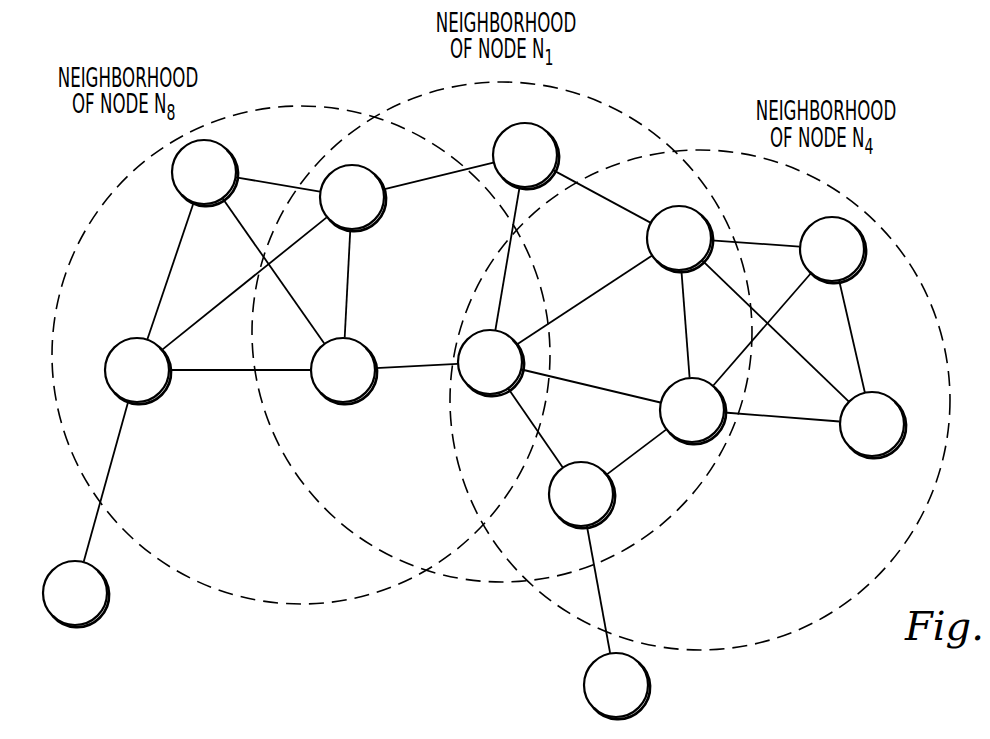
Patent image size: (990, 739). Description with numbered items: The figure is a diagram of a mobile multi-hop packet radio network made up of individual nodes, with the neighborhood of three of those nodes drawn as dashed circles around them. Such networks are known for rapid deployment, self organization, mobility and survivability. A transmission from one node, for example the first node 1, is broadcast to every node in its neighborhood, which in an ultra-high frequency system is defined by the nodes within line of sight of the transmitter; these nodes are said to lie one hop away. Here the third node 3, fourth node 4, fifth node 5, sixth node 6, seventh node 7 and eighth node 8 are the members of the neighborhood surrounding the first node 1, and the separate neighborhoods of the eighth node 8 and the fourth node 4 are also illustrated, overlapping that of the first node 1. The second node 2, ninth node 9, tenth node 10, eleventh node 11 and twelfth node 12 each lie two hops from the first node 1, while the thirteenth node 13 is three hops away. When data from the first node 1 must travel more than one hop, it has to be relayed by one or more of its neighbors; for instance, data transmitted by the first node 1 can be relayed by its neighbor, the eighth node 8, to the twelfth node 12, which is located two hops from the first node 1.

The node N1 1 is at (491, 363).
The node N2 2 is at (617, 686).
The node N3 3 is at (582, 495).
The node N4 4 is at (693, 411).
The node N5 5 is at (680, 239).
The node N6 6 is at (526, 156).
The node N7 7 is at (353, 198).
The node N8 8 is at (344, 371).
The node N9 9 is at (873, 425).
The node N10 10 is at (833, 250).
The node N11 11 is at (205, 173).
The node N12 12 is at (138, 371).
The node N13 13 is at (76, 594).